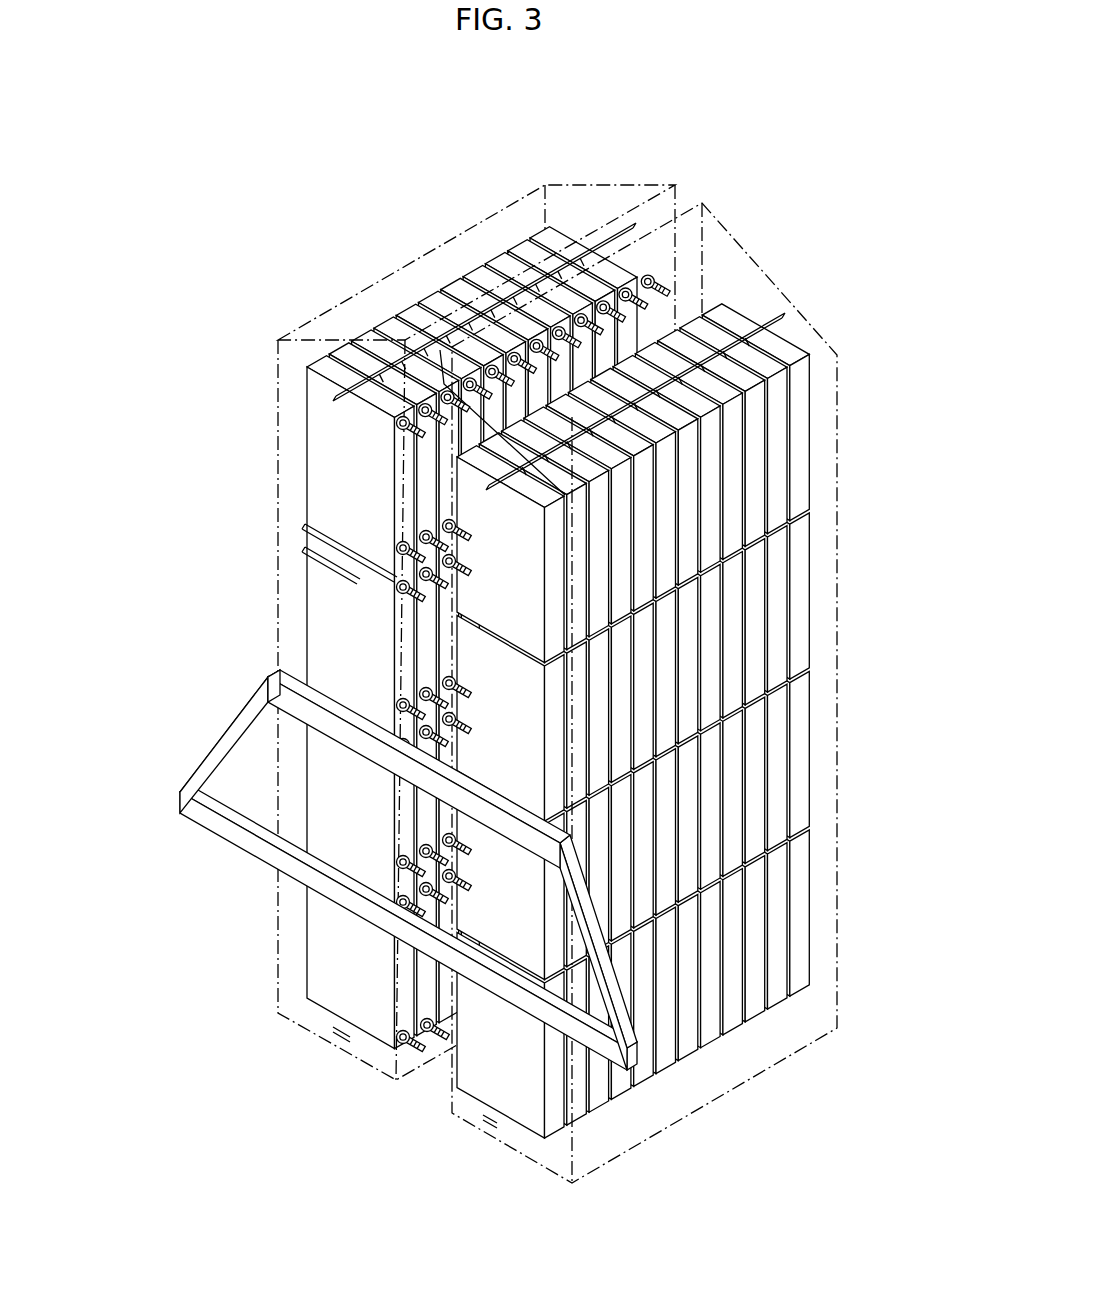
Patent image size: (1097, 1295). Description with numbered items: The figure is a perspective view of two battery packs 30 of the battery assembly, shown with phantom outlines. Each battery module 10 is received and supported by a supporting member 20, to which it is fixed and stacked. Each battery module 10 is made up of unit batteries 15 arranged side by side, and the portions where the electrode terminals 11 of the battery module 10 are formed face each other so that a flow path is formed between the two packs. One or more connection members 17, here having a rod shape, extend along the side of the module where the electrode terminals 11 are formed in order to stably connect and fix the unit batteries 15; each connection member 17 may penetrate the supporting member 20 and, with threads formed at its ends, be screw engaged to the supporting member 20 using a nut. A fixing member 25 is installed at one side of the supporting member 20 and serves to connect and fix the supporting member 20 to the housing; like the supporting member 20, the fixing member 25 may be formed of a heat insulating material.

The battery module 10 is at (300, 368).
The electrode terminal 11 is at (396, 434).
The unit battery 15 is at (480, 272).
The connection member 17 is at (335, 400).
The supporting member 20 is at (317, 303).
The fixing member 25 is at (210, 752).
The battery pack 30 is at (737, 170).